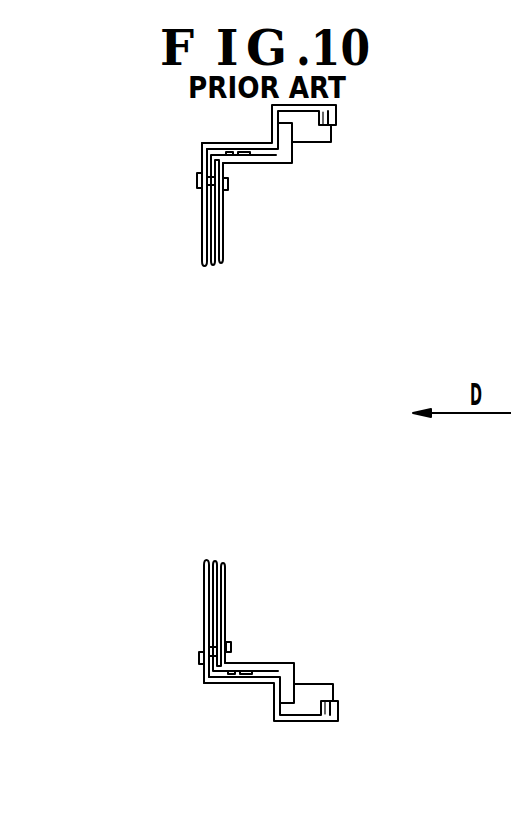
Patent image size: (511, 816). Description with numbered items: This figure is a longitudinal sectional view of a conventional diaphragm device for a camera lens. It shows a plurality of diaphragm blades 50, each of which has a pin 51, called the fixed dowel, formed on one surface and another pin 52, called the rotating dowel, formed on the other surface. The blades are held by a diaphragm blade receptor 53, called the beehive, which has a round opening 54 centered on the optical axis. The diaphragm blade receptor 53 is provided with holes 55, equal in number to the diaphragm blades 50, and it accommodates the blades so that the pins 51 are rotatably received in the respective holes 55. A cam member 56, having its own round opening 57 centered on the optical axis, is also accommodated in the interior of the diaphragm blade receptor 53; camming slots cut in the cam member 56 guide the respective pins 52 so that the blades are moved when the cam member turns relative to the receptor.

The diaphragm blade 50 is at (205, 266).
The pin (fixed dowel) 51 is at (197, 180).
The pin (rotating dowel) 52 is at (228, 184).
The diaphragm blade receptor 53 is at (307, 722).
The round opening 54 is at (203, 545).
The hole 55 is at (203, 665).
The cam member 56 is at (308, 693).
The round opening 57 is at (222, 545).